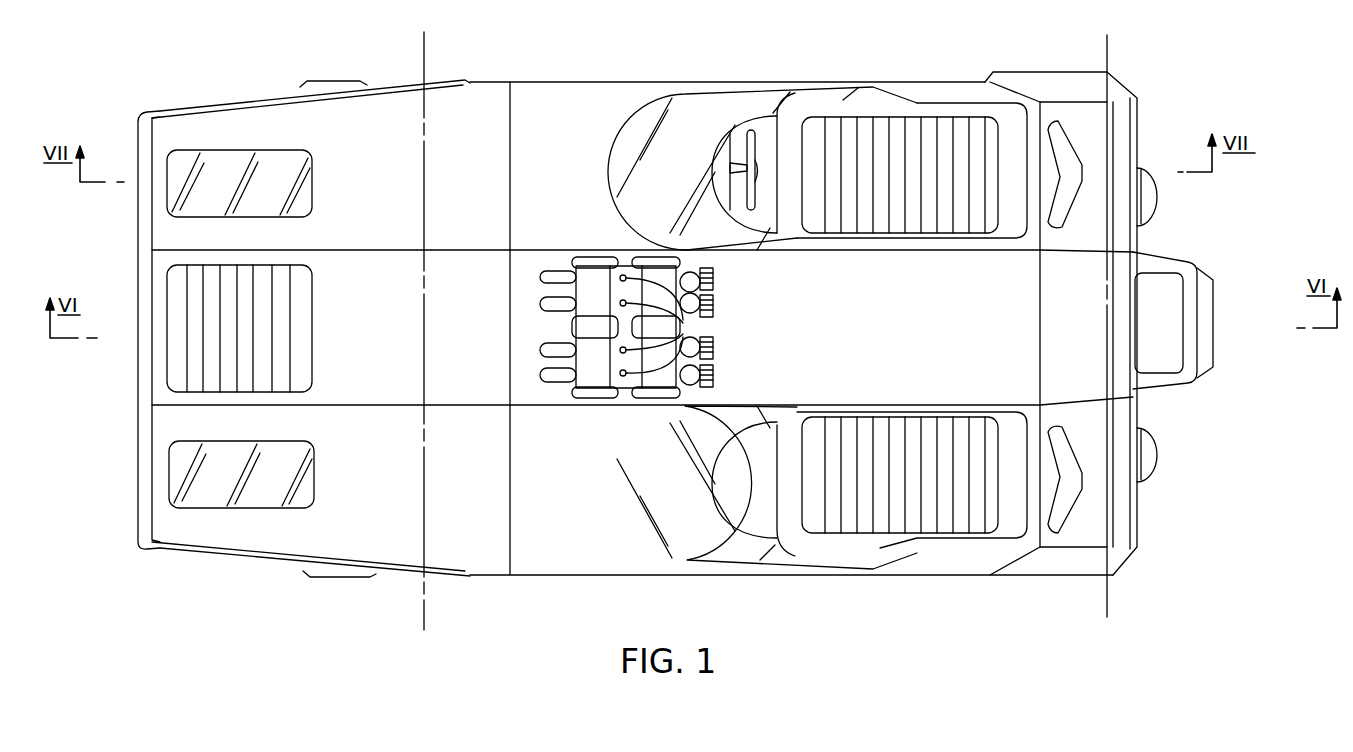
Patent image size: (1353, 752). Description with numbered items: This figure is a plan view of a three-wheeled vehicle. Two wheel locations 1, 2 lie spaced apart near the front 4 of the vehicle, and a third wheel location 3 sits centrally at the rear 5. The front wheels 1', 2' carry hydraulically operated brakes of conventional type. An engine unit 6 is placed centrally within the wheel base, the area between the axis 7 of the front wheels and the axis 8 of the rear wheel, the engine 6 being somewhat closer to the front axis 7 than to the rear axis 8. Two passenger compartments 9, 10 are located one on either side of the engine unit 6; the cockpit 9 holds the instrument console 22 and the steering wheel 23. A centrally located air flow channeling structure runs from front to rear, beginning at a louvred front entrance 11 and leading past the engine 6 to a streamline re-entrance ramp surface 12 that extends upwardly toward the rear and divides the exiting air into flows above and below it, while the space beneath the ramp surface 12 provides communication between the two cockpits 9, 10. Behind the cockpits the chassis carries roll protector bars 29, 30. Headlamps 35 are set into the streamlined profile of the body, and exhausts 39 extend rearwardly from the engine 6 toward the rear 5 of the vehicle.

The wheel location 1 is at (311, 76).
The front wheel 1' is at (333, 60).
The wheel location 2 is at (311, 590).
The front wheel 2' is at (339, 598).
The wheel location 3 is at (1216, 325).
The front 4 is at (112, 282).
The rear 5 is at (1230, 434).
The engine unit 6 is at (613, 285).
The axis of the front wheels 7 is at (428, 40).
The axis of the rear wheel 8 is at (1111, 45).
The passenger compartment 9 is at (885, 135).
The passenger compartment 10 is at (876, 525).
The louvred front entrance 11 is at (178, 360).
The ramp surface 12 is at (882, 347).
The instrument console 22 is at (721, 158).
The steering wheel 23 is at (750, 128).
The roll protector bar 29 is at (1060, 133).
The roll protector bar 30 is at (1062, 514).
The headlamp 35 is at (298, 183).
The exhaust 39 is at (1150, 198).